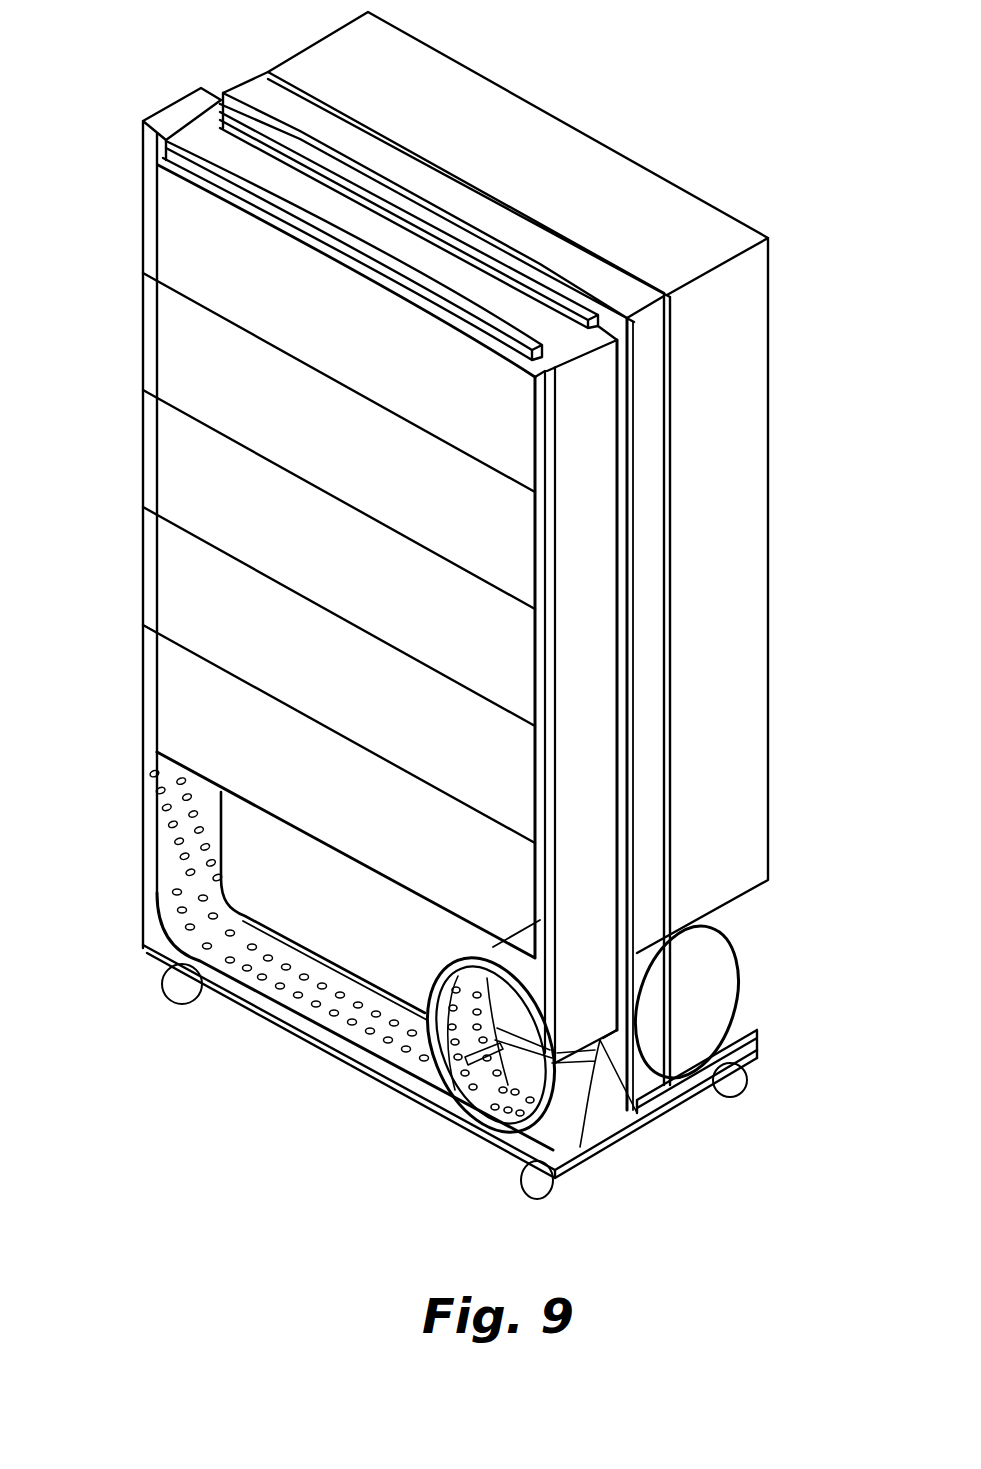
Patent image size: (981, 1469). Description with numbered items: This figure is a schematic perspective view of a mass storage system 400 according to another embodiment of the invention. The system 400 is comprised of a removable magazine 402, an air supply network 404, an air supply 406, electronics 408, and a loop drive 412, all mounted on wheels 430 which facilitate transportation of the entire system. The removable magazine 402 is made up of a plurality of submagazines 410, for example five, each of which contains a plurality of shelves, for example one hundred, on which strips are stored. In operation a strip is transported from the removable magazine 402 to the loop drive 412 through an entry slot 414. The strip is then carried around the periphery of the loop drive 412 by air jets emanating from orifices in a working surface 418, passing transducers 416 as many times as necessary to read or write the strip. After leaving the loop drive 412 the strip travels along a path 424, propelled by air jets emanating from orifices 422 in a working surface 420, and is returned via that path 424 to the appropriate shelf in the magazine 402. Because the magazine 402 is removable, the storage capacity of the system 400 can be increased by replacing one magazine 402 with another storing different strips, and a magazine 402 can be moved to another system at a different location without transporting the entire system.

The mass storage system 400 is at (630, 70).
The removable magazine 402 is at (150, 203).
The air supply network 404 is at (262, 88).
The air supply 406 is at (725, 960).
The electronics 408 is at (653, 195).
The submagazines 410 is at (170, 548).
The loop drive 412 is at (560, 1082).
The entry slot 414 is at (630, 1110).
The transducers 416 is at (480, 1090).
The working surface 418 is at (515, 1097).
The working surface 420 is at (303, 990).
The orifices 422 is at (400, 1022).
The path 424 is at (240, 965).
The wheels 430 is at (165, 983).